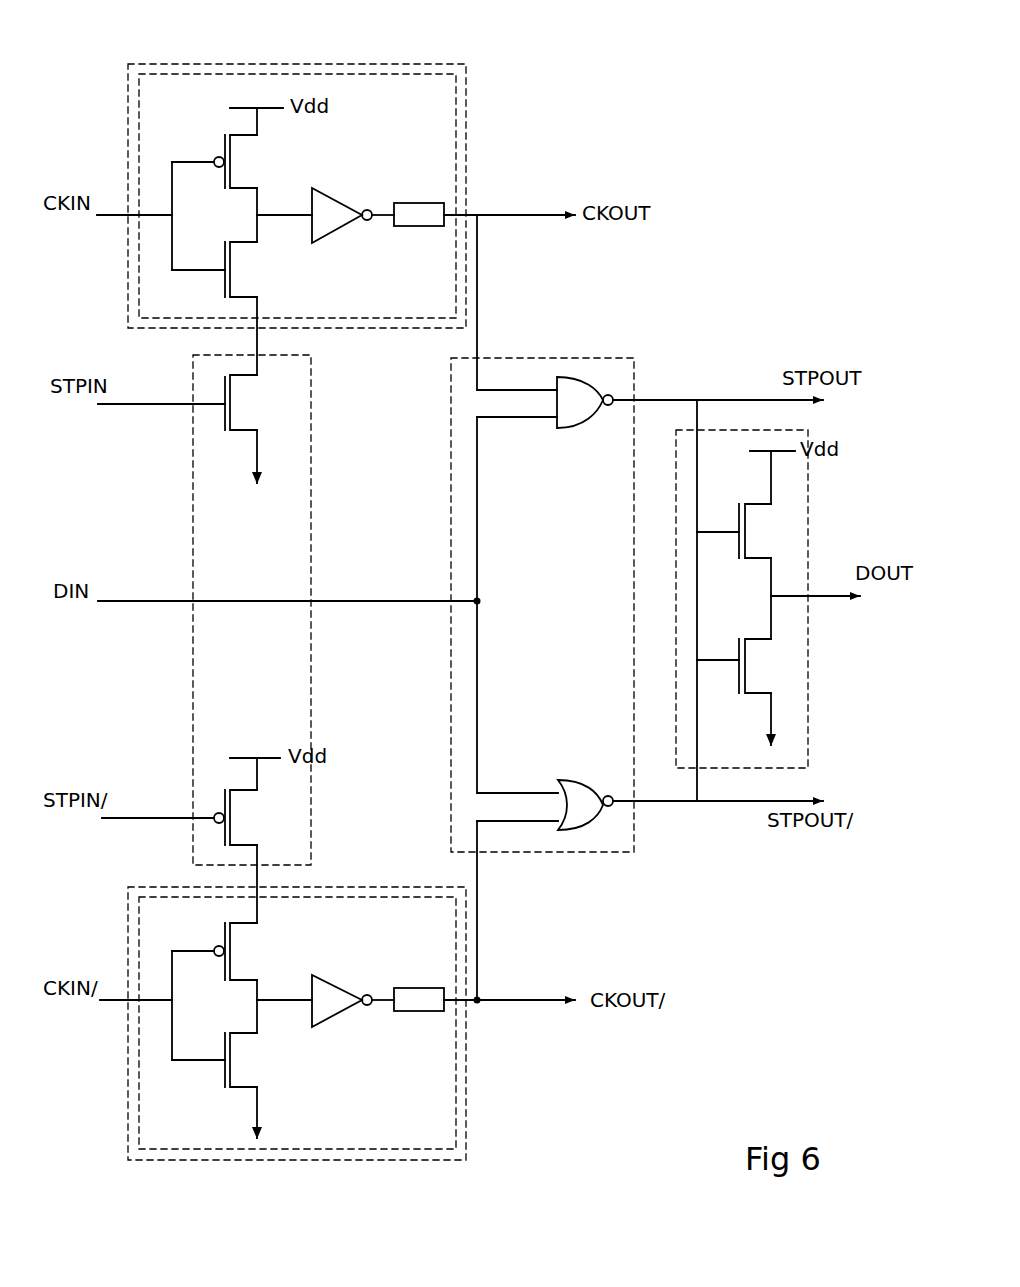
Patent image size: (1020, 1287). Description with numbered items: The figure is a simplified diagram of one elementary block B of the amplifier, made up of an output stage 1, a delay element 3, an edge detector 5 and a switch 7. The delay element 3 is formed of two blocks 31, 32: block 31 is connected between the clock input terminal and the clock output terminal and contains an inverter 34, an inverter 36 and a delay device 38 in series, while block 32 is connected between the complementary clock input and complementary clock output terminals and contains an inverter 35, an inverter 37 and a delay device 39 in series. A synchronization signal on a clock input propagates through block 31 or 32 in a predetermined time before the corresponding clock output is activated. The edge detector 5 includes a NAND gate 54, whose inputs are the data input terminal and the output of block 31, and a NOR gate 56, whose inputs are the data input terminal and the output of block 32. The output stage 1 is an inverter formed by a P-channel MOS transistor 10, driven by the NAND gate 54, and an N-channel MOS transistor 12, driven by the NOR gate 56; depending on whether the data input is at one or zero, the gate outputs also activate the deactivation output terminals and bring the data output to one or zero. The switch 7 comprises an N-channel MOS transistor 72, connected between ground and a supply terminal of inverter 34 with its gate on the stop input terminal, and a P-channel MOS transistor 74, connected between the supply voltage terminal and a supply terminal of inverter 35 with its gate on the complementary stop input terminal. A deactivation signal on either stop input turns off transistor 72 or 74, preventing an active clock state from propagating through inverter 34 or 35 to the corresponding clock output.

The elementary block B is at (715, 123).
The delay element 3 is at (367, 62).
The block 31 is at (397, 303).
The block 32 is at (397, 928).
The inverter 34 is at (160, 168).
The inverter 35 is at (198, 1010).
The inverter 36 is at (345, 195).
The inverter 37 is at (335, 1000).
The delay device 38 is at (448, 193).
The delay device 39 is at (427, 1012).
The switch 7 is at (313, 528).
The N-channel MOS transistor 72 is at (250, 405).
The P-channel MOS transistor 74 is at (242, 810).
The edge detector 5 is at (612, 855).
The NAND gate 54 is at (585, 375).
The NOR gate 56 is at (583, 775).
The output stage 1 is at (808, 752).
The P-channel MOS transistor 10 is at (765, 530).
The N-channel MOS transistor 12 is at (765, 663).